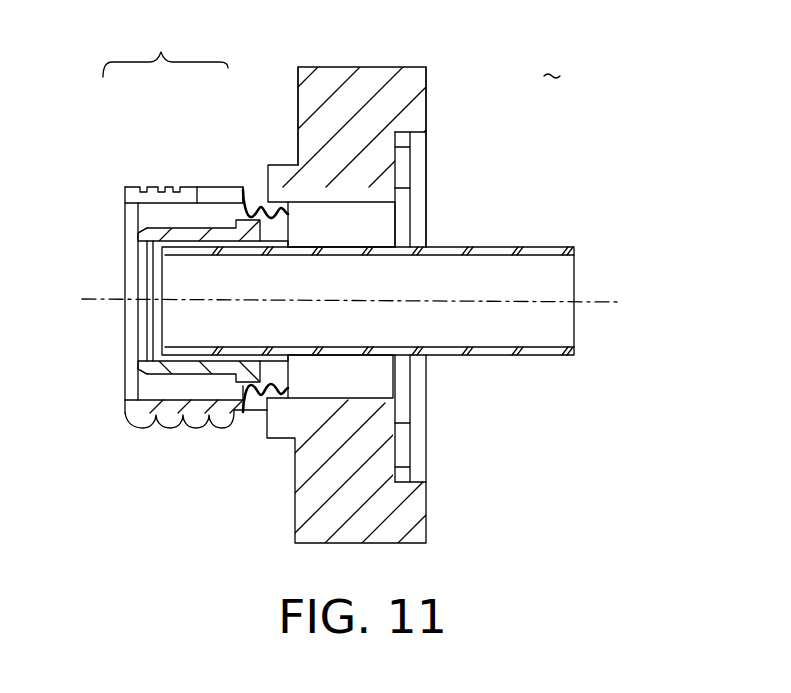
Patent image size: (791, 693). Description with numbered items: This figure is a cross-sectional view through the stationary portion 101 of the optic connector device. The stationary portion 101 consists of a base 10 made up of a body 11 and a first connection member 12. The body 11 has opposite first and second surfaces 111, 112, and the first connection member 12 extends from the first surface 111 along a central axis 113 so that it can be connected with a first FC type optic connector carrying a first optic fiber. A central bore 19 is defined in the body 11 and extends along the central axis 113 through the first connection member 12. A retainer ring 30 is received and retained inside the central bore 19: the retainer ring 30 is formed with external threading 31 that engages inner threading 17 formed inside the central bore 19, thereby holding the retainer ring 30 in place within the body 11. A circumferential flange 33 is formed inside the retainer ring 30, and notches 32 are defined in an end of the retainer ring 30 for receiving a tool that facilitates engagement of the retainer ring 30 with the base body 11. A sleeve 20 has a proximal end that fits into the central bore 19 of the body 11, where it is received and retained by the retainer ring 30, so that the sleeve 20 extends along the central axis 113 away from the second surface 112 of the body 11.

The base 10 is at (165, 49).
The body 11 is at (322, 126).
The first connection member 12 is at (135, 188).
The inner threading 17 is at (262, 203).
The central bore 19 is at (358, 225).
The sleeve 20 is at (460, 247).
The retainer ring 30 is at (158, 232).
The external threading 31 is at (243, 193).
The notches 32 is at (283, 222).
The circumferential flange 33 is at (142, 246).
The stationary portion 101 is at (555, 62).
The first surface 111 is at (298, 73).
The second surface 112 is at (427, 92).
The central axis 113 is at (588, 303).